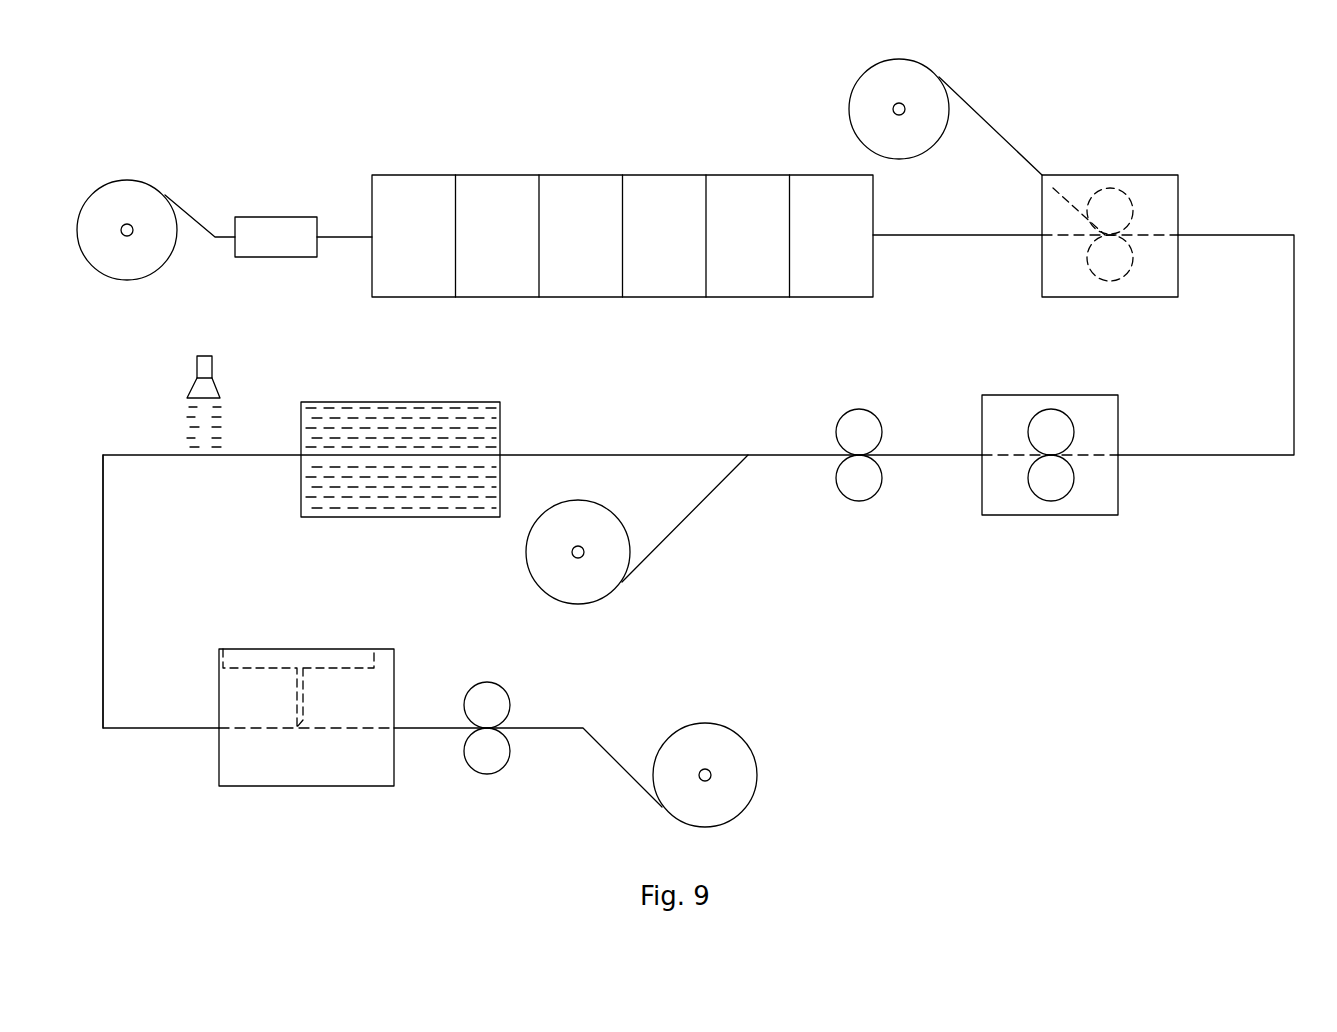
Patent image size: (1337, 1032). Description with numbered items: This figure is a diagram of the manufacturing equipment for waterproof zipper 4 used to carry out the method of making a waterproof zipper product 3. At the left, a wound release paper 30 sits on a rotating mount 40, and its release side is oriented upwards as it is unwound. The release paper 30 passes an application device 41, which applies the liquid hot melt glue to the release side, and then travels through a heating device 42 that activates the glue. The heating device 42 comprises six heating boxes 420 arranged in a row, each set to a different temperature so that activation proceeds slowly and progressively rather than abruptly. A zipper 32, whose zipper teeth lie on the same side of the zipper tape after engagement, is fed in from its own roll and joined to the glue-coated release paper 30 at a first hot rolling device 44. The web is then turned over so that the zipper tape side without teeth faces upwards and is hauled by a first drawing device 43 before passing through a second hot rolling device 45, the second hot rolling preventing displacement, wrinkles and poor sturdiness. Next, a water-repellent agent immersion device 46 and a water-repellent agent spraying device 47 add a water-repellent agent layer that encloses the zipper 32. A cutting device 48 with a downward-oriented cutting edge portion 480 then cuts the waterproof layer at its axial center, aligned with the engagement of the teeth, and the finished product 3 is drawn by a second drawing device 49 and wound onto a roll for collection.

The waterproof zipper product 3 is at (1235, 235).
The manufacturing equipment for waterproof zipper 4 is at (160, 153).
The release paper 30 is at (187, 208).
The zipper 32 is at (992, 125).
The rotating mount 40 is at (132, 230).
The application device 41 is at (290, 257).
The heating device 42 is at (839, 103).
The heating boxes 420 is at (391, 175).
The first drawing device 43 is at (859, 408).
The first hot rolling device 44 is at (1108, 175).
The second hot rolling device 45 is at (1050, 515).
The water-repellent agent immersion device 46 is at (452, 402).
The water-repellent agent spraying device 47 is at (213, 370).
The cutting device 48 is at (307, 786).
The cutting edge portion 480 is at (303, 693).
The second drawing device 49 is at (487, 774).